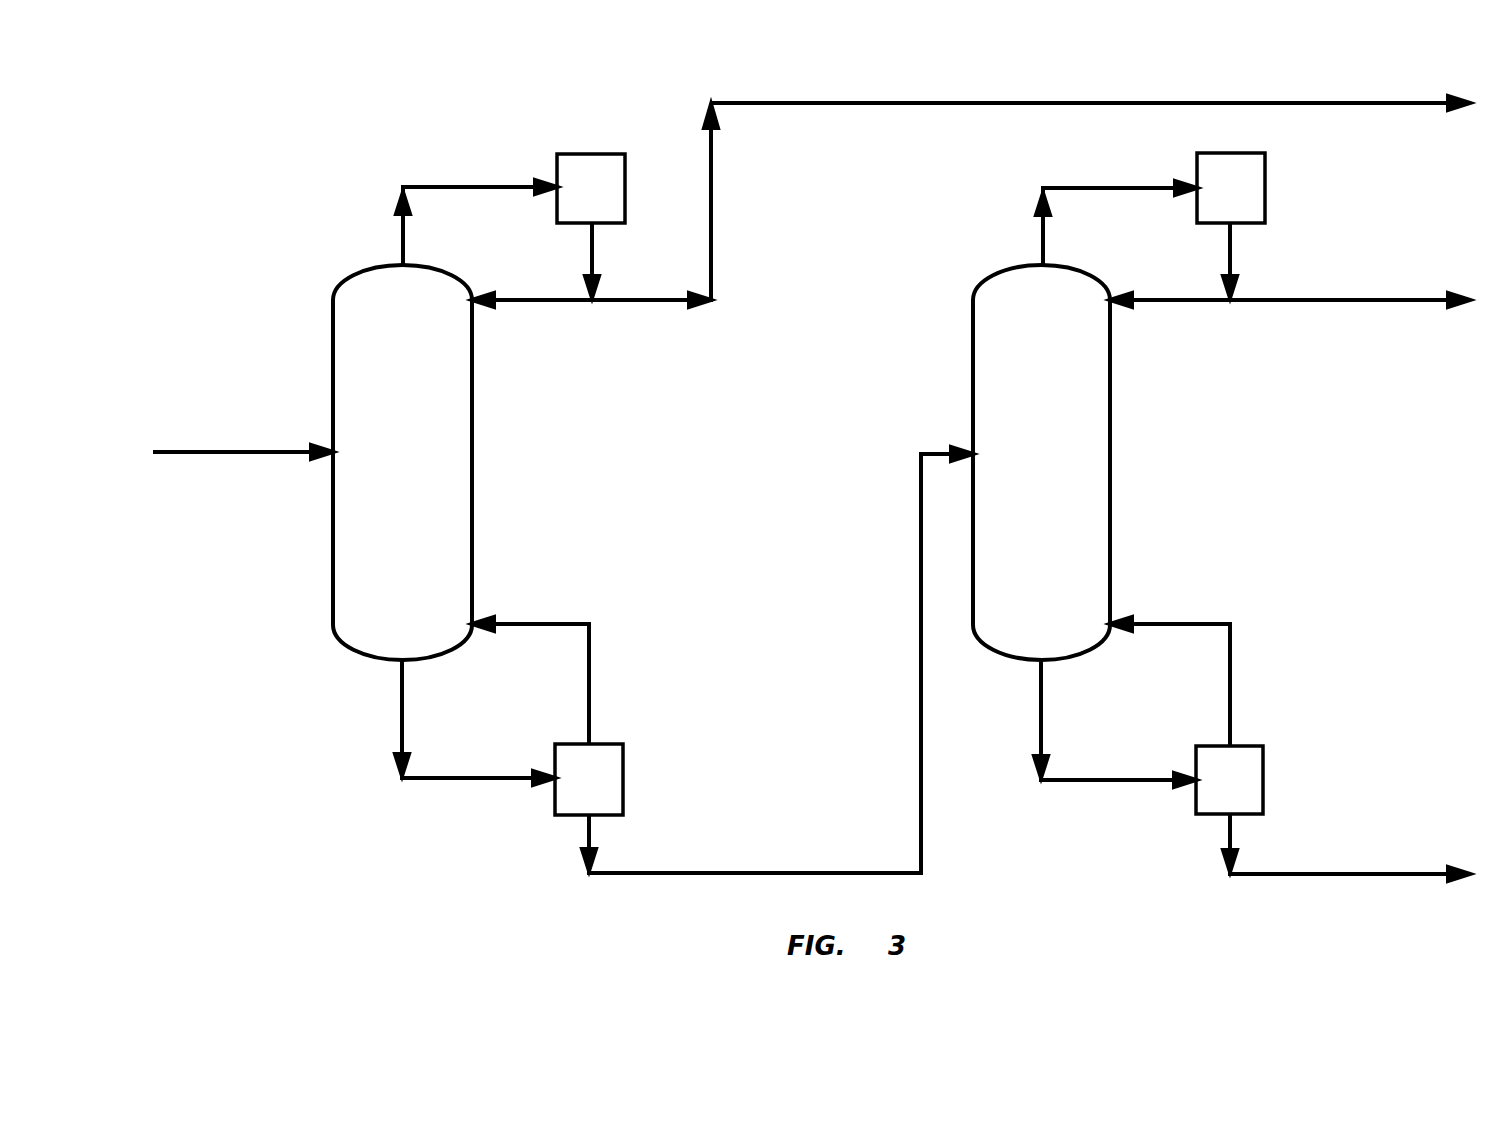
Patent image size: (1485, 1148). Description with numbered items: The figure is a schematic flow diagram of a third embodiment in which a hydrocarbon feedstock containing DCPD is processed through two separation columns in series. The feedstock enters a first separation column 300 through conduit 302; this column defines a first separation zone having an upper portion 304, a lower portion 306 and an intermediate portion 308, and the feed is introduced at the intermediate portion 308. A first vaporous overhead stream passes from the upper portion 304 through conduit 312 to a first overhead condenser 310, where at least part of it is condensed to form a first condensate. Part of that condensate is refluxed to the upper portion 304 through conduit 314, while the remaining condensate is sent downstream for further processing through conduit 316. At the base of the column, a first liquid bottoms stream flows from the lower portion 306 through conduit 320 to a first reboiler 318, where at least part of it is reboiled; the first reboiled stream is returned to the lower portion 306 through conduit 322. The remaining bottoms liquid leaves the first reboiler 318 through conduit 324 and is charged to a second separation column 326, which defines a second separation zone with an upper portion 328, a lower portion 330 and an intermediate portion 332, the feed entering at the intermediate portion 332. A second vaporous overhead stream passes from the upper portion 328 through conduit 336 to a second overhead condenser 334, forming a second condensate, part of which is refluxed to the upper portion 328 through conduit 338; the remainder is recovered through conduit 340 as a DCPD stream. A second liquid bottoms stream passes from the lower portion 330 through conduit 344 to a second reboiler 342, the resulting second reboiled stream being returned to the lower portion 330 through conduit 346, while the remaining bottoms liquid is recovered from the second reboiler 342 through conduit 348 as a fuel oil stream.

The first separation column 300 is at (476, 465).
The conduit 302 is at (263, 447).
The upper portion 304 is at (372, 297).
The lower portion 306 is at (362, 631).
The intermediate portion 308 is at (346, 465).
The first overhead condenser 310 is at (592, 152).
The conduit 312 is at (462, 185).
The conduit 314 is at (595, 258).
The conduit 316 is at (797, 107).
The first reboiler 318 is at (626, 788).
The conduit 320 is at (470, 782).
The conduit 322 is at (553, 622).
The conduit 324 is at (800, 872).
The second separation column 326 is at (1113, 465).
The upper portion 328 is at (1003, 296).
The lower portion 330 is at (996, 636).
The intermediate portion 332 is at (993, 455).
The second overhead condenser 334 is at (1268, 198).
The conduit 336 is at (1108, 185).
The conduit 338 is at (1233, 260).
The conduit 340 is at (1348, 302).
The second reboiler 342 is at (1266, 790).
The conduit 344 is at (1116, 778).
The conduit 346 is at (1185, 620).
The conduit 348 is at (1306, 878).